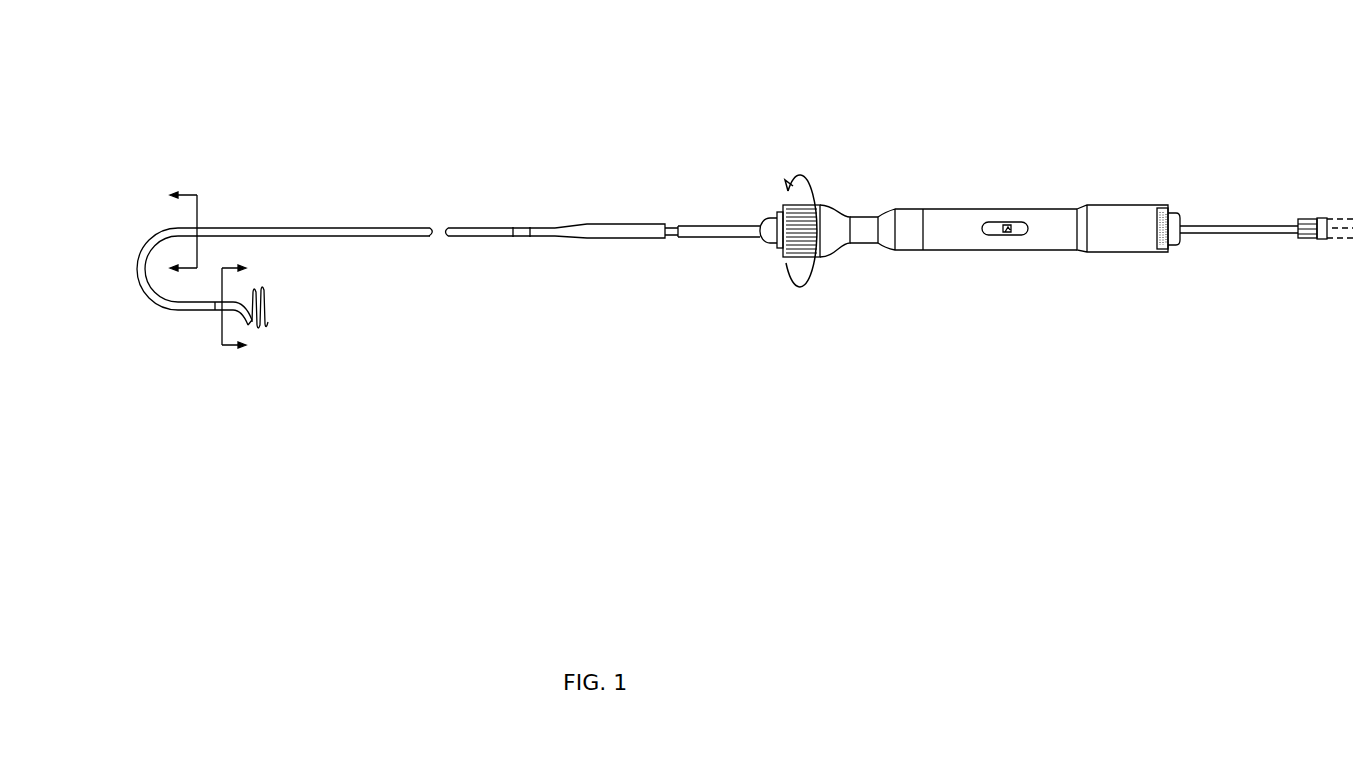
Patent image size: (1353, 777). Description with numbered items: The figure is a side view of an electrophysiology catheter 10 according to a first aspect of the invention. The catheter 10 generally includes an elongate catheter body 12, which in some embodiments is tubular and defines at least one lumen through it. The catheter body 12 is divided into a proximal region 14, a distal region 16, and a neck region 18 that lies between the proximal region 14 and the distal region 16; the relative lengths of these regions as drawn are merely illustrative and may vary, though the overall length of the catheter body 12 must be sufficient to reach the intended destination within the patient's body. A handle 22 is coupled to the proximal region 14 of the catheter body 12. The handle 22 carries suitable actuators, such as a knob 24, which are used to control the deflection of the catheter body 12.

The electrophysiology catheter 10 is at (737, 86).
The catheter body 12 is at (397, 191).
The proximal region 14 is at (152, 237).
The distal region 16 is at (267, 288).
The neck region 18 is at (215, 312).
The handle 22 is at (1007, 245).
The knob 24 is at (795, 215).